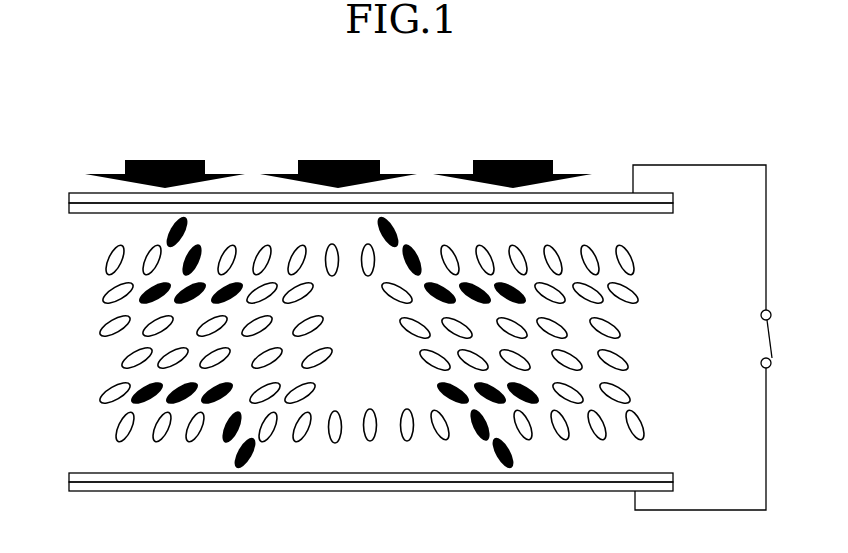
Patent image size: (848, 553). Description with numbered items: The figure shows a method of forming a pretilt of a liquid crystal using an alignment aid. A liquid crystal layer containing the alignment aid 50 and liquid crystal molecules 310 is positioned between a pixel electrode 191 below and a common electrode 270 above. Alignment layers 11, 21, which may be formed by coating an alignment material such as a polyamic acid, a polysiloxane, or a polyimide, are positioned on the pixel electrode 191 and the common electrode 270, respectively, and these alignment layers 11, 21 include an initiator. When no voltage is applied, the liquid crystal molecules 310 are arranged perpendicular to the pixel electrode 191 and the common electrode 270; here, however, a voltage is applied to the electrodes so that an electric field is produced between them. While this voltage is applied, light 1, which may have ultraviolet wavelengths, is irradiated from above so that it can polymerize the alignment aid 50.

The light 1 is at (527, 160).
The common electrode 270 is at (85, 197).
The alignment layer 21 is at (88, 208).
The alignment layer 11 is at (89, 476).
The pixel electrode 191 is at (86, 485).
The liquid crystal molecules 310 is at (628, 292).
The alignment aid 50 is at (523, 303).